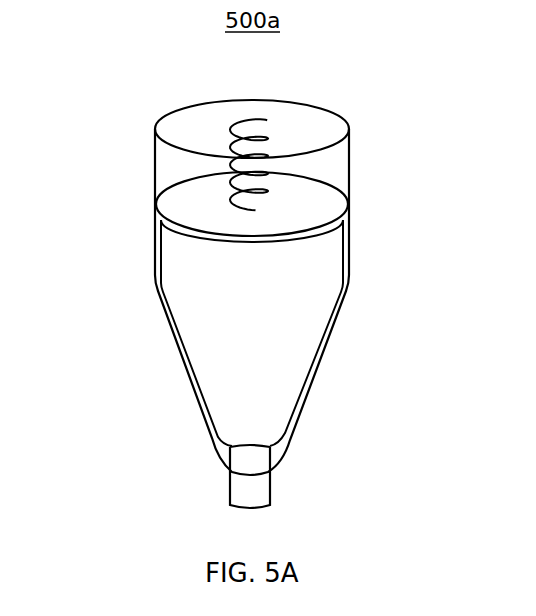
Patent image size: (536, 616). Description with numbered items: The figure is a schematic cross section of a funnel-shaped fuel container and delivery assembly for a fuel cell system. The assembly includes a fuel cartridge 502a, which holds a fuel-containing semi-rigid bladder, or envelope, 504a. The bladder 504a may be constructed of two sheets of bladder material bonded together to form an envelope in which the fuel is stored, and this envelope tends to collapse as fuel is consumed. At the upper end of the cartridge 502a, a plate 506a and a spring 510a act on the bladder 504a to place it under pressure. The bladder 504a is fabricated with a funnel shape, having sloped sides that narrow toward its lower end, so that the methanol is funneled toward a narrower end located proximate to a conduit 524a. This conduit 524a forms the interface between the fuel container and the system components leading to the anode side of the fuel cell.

The fuel cartridge 502a is at (155, 232).
The semi-rigid bladder 504a is at (345, 297).
The plate 506a is at (322, 197).
The spring 510a is at (268, 138).
The conduit 524a is at (272, 488).